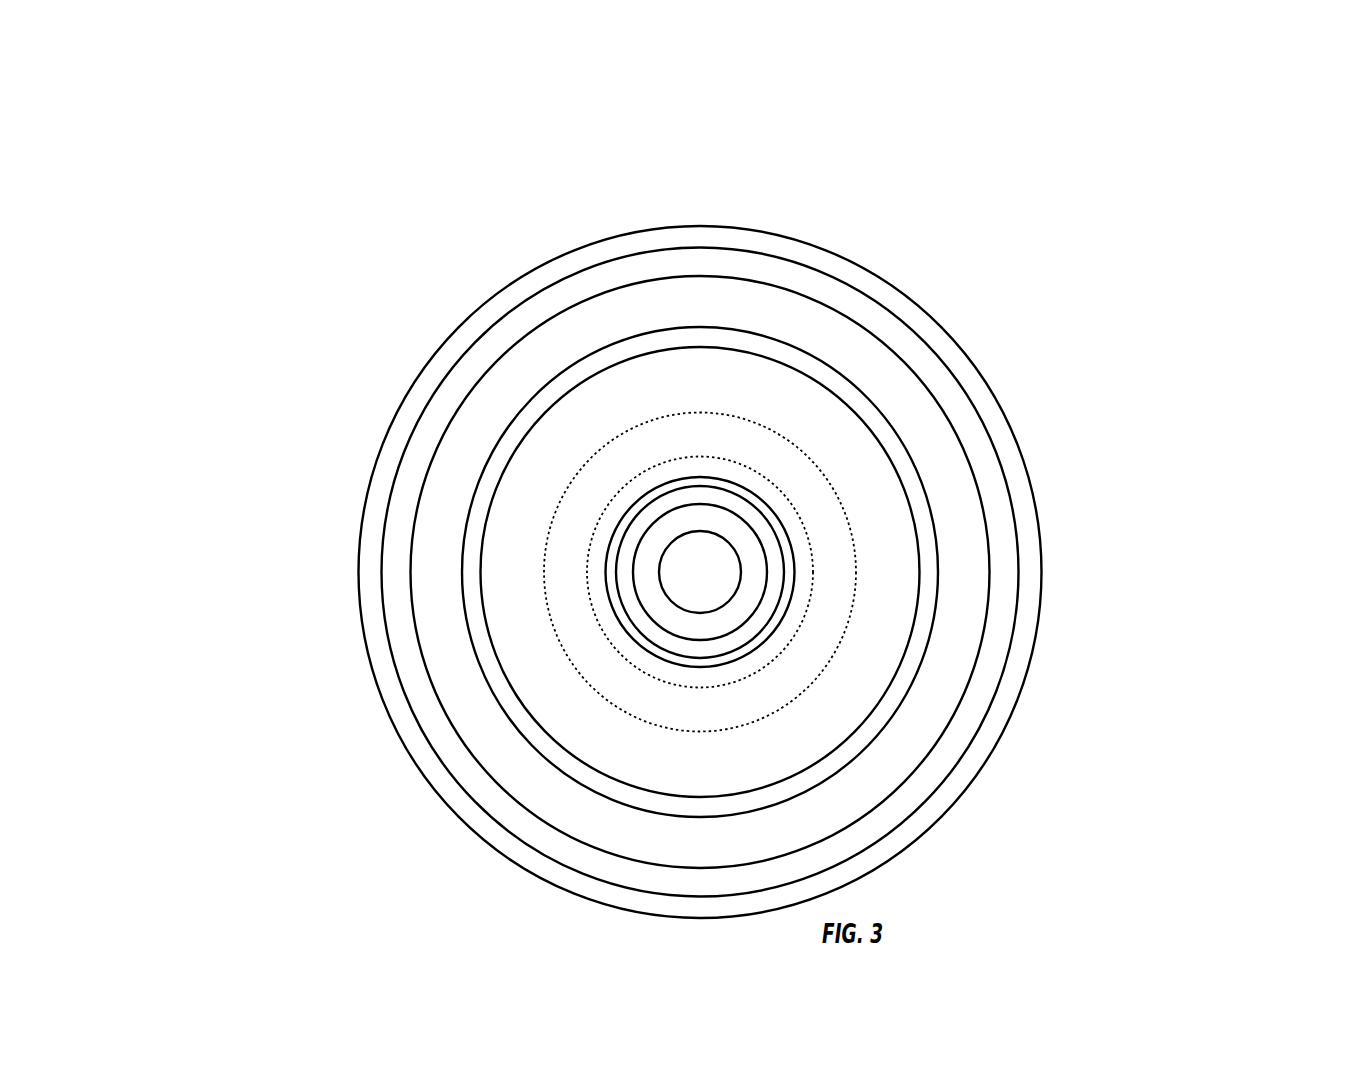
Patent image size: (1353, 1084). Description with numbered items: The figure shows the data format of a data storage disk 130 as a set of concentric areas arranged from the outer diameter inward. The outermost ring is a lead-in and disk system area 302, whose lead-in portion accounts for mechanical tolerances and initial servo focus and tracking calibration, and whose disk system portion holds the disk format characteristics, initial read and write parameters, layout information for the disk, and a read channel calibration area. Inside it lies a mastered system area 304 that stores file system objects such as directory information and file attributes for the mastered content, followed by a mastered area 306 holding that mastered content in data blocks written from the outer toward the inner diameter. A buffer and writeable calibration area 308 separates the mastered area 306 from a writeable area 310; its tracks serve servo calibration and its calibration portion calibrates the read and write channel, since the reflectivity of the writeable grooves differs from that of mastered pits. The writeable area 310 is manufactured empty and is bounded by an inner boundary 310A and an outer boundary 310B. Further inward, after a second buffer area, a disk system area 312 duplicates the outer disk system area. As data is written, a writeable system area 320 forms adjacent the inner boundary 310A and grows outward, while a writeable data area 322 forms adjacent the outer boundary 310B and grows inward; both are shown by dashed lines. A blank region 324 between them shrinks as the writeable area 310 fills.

The data storage disk 130 is at (1064, 148).
The lead-in and disk system area 302 is at (857, 283).
The mastered system area (MSA) 304 is at (877, 318).
The mastered area 306 is at (883, 380).
The buffer and writeable calibration area 308 is at (880, 428).
The writeable area 310 is at (694, 572).
The inner boundary 310A is at (491, 547).
The outer boundary 310B is at (548, 572).
The disk system area 312 is at (723, 540).
The writeable system area (WSA) 320 is at (767, 653).
The writeable data area (WDA) 322 is at (926, 572).
The blank region 324 is at (763, 708).